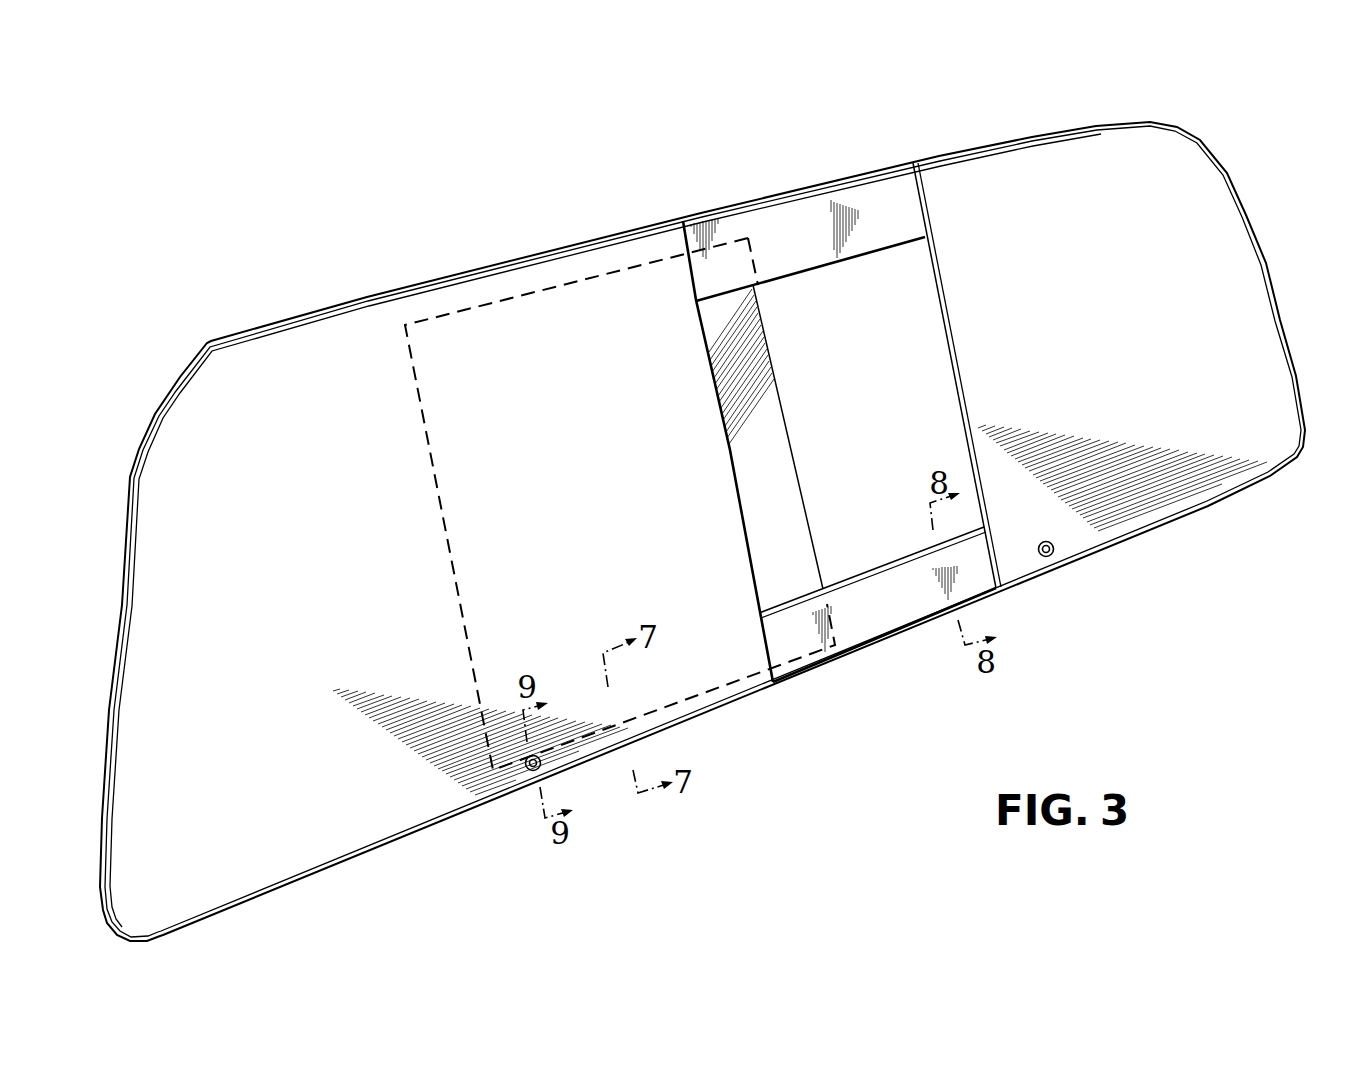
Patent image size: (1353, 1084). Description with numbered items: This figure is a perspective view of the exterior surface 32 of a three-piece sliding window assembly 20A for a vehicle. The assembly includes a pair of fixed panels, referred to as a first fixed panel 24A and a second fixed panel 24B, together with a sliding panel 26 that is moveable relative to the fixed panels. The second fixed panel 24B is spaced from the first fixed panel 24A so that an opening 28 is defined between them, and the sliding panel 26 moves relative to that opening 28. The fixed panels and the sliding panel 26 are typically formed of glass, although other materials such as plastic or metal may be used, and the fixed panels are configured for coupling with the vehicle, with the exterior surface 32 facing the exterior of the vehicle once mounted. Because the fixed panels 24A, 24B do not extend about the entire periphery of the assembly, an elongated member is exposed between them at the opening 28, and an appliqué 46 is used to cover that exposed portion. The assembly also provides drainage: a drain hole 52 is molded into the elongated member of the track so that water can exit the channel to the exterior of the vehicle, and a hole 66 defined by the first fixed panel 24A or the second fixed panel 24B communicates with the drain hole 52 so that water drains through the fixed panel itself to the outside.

The three-piece sliding window assembly 20A is at (1184, 106).
The first fixed panel 24A is at (158, 518).
The second fixed panel 24B is at (1235, 282).
The sliding panel 26 is at (723, 308).
The opening 28 is at (886, 281).
The exterior surface 32 is at (326, 508).
The appliqué 46 is at (797, 222).
The drain hole 52 is at (540, 768).
The hole 66 is at (538, 758).